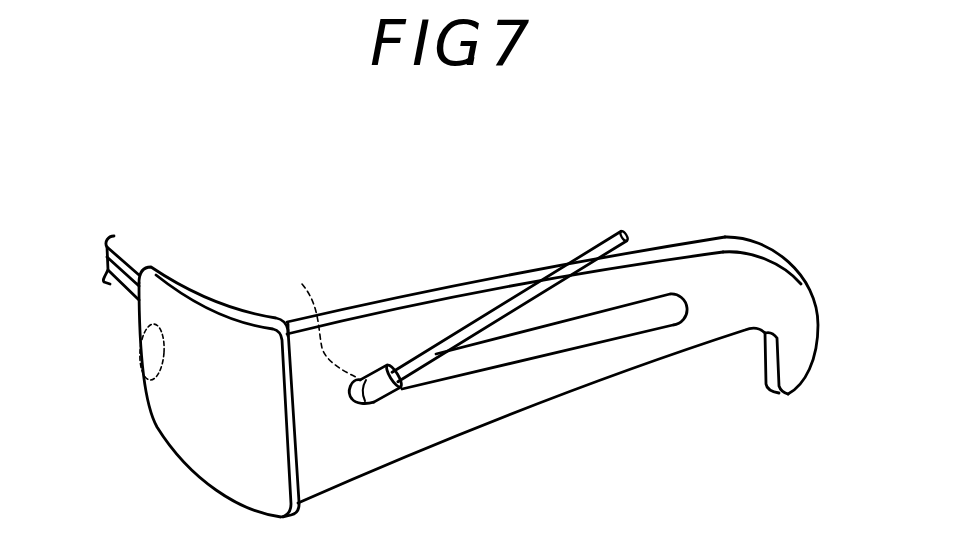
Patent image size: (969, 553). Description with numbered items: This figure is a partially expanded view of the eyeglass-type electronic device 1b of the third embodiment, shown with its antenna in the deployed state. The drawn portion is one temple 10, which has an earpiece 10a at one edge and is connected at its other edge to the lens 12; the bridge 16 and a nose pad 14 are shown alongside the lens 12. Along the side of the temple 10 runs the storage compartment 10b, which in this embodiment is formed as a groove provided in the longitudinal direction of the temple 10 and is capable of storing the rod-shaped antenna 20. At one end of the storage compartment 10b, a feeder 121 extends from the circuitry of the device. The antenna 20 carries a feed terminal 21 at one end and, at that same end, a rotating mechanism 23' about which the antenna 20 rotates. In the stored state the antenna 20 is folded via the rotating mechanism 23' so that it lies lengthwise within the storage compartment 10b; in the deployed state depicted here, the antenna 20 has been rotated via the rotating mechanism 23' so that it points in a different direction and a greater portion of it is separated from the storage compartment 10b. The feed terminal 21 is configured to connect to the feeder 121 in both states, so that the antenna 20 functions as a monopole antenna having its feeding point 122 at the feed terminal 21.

The electronic device 1b is at (441, 183).
The temple 10 is at (552, 382).
The earpiece 10a is at (789, 290).
The storage compartment 10b is at (647, 313).
The lens 12 is at (190, 420).
The nose pad 14 is at (148, 355).
The bridge 16 is at (121, 283).
The antenna 20 is at (591, 248).
The feed terminal 21 is at (385, 387).
The rotating mechanism 23' is at (361, 456).
The feeder 121 is at (321, 318).
The feeding point 122 is at (376, 366).